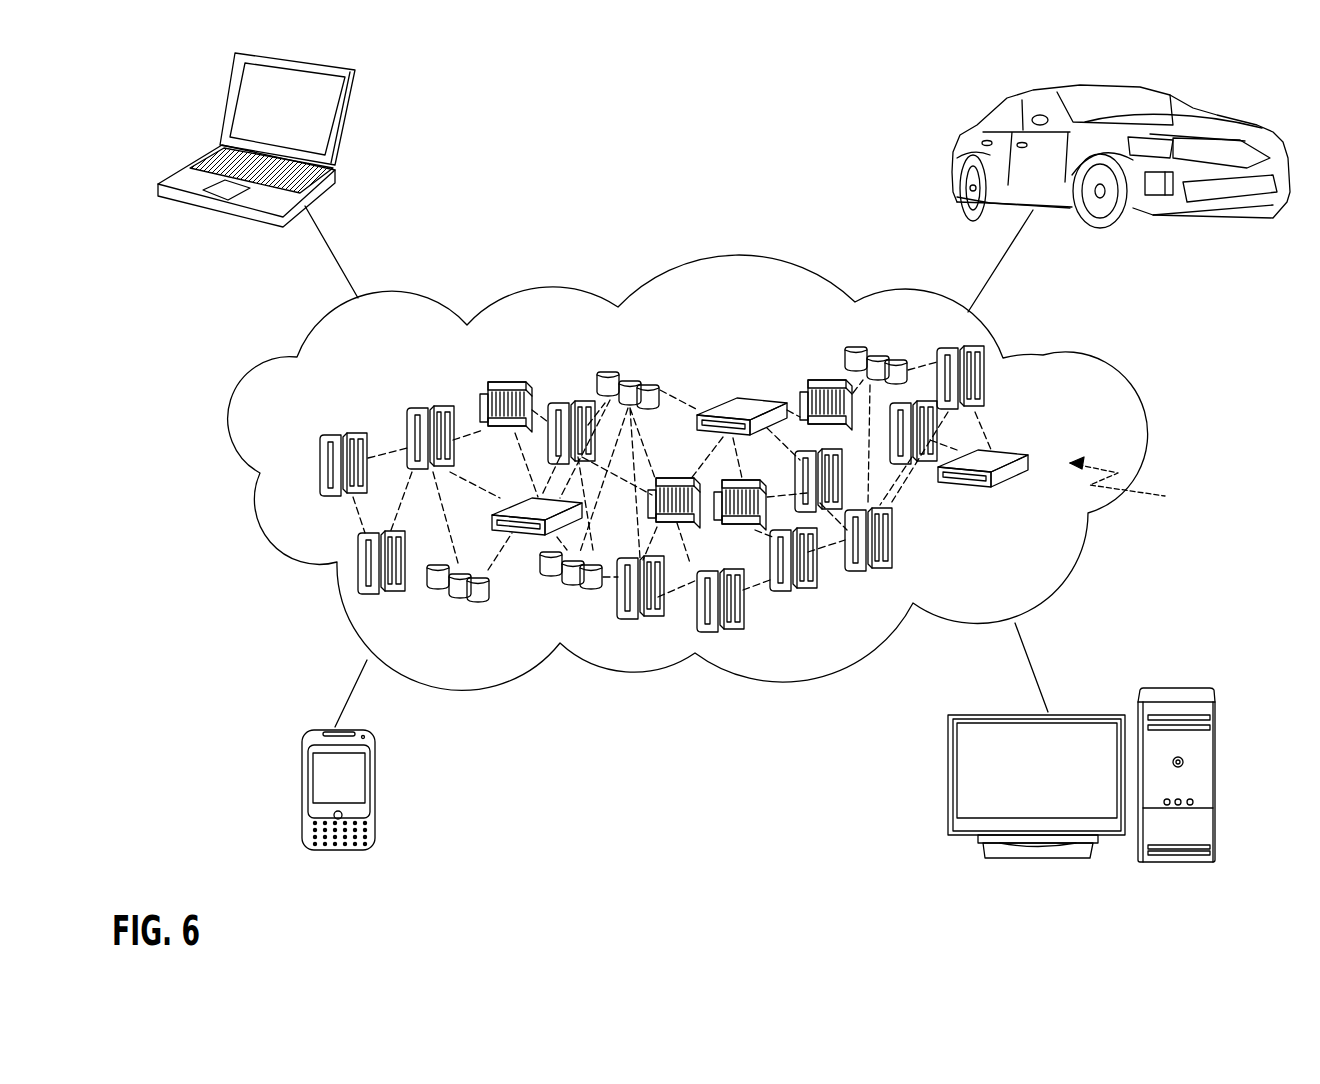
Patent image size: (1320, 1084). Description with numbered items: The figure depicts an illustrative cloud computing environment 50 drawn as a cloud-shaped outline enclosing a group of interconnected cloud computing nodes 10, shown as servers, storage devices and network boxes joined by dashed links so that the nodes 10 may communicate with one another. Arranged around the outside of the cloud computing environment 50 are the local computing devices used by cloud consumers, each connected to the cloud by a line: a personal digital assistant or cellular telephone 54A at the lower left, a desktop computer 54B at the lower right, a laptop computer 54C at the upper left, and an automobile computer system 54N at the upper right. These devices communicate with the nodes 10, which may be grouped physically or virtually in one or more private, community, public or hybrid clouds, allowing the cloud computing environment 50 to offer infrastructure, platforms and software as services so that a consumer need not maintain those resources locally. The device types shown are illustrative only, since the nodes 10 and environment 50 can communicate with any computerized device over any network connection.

The cloud computing nodes 10 is at (1137, 487).
The cloud computing environment 50 is at (1097, 373).
The personal digital assistant (PDA) or cellular telephone 54A is at (300, 795).
The desktop computer 54B is at (1180, 688).
The laptop computer 54C is at (345, 128).
The automobile computer system 54N is at (960, 137).